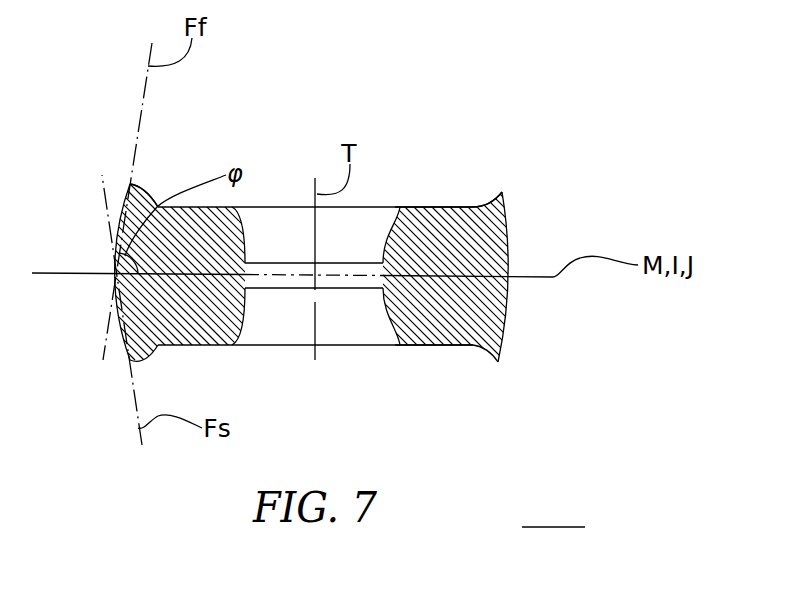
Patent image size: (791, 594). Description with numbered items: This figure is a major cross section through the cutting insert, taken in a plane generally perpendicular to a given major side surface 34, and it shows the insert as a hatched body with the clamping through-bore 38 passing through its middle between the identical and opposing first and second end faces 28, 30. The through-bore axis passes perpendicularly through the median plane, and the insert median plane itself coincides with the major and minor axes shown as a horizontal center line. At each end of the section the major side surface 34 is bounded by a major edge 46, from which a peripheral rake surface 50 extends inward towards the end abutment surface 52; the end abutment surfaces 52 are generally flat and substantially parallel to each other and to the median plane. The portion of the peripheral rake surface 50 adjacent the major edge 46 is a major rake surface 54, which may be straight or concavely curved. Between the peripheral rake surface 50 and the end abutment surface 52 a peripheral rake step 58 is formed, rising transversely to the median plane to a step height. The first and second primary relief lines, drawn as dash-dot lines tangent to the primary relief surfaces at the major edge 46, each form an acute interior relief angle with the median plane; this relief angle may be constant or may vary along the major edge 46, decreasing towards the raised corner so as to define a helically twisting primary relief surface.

The first end face 28 is at (413, 207).
The second end face 30 is at (432, 346).
The major side surface 34 is at (508, 322).
The clamping through-bore 38 is at (231, 210).
The major edge 46 is at (133, 183).
The peripheral rake surface 50 is at (167, 193).
The end abutment surface 52 is at (440, 207).
The major rake surface 54 is at (159, 183).
The peripheral rake step 58 is at (143, 353).